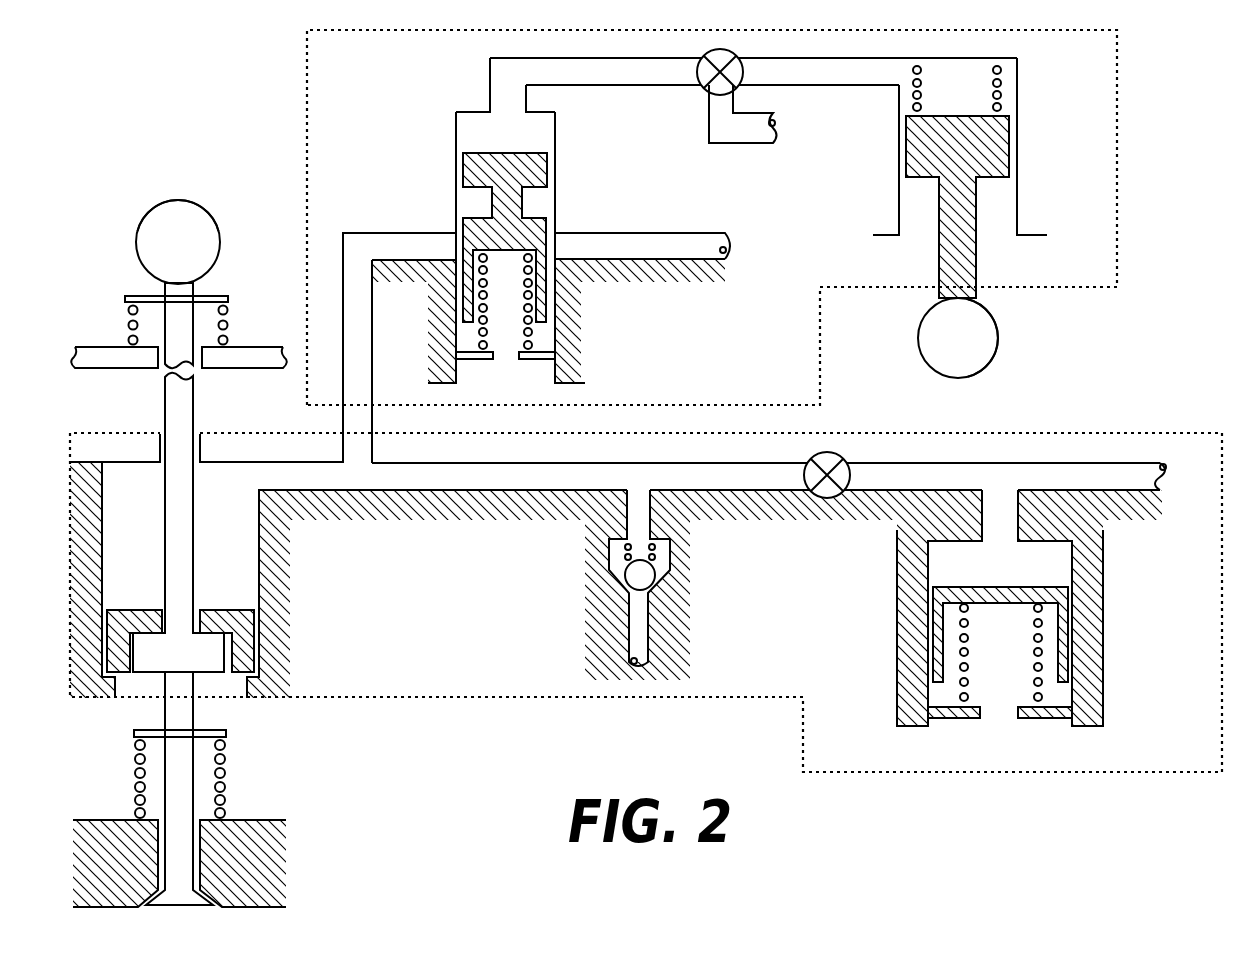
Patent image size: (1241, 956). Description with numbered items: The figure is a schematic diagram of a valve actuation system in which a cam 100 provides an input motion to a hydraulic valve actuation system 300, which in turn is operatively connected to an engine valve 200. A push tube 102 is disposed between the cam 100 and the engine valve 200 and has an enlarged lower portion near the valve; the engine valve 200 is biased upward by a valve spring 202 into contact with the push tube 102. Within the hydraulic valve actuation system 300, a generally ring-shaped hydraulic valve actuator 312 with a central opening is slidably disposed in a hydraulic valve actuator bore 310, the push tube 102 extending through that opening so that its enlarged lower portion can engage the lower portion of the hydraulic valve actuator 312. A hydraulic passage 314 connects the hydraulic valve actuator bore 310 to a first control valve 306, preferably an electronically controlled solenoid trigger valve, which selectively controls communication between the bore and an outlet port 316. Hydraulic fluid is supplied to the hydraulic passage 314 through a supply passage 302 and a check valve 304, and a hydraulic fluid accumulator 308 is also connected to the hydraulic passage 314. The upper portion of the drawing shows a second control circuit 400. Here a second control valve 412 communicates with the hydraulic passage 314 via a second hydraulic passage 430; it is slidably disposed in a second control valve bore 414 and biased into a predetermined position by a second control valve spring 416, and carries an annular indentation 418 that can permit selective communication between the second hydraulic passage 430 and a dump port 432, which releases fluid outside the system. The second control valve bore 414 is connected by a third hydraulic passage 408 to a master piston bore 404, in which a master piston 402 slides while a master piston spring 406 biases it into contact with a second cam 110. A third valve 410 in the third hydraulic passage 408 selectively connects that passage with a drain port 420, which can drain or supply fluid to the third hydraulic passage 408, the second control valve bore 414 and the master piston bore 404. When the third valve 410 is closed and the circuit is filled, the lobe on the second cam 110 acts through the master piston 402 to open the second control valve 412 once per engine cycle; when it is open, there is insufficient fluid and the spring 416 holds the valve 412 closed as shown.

The cam 100 is at (205, 254).
The push tube 102 is at (183, 410).
The second cam 110 is at (982, 349).
The engine valve 200 is at (183, 787).
The valve spring 202 is at (228, 758).
The hydraulic valve actuation system 300 is at (553, 656).
The supply passage 302 is at (645, 651).
The check valve 304 is at (645, 578).
The first control valve 306 is at (827, 498).
The hydraulic fluid accumulator 308 is at (1026, 665).
The hydraulic valve actuator bore 310 is at (160, 537).
The hydraulic valve actuator 312 is at (253, 625).
The hydraulic passage 314 is at (507, 478).
The outlet port 316 is at (1160, 490).
The second control valve circuit 400 is at (765, 361).
The master piston 402 is at (912, 160).
The master piston bore 404 is at (980, 100).
The master piston spring 406 is at (1000, 95).
The third hydraulic passage 408 is at (832, 72).
The third valve 410 is at (705, 80).
The second control valve 412 is at (540, 170).
The second control valve bore 414 is at (530, 142).
The second control valve spring 416 is at (530, 332).
The annular indentation 418 is at (470, 203).
The drain port 420 is at (737, 130).
The second hydraulic passage 430 is at (363, 326).
The dump port 432 is at (730, 237).